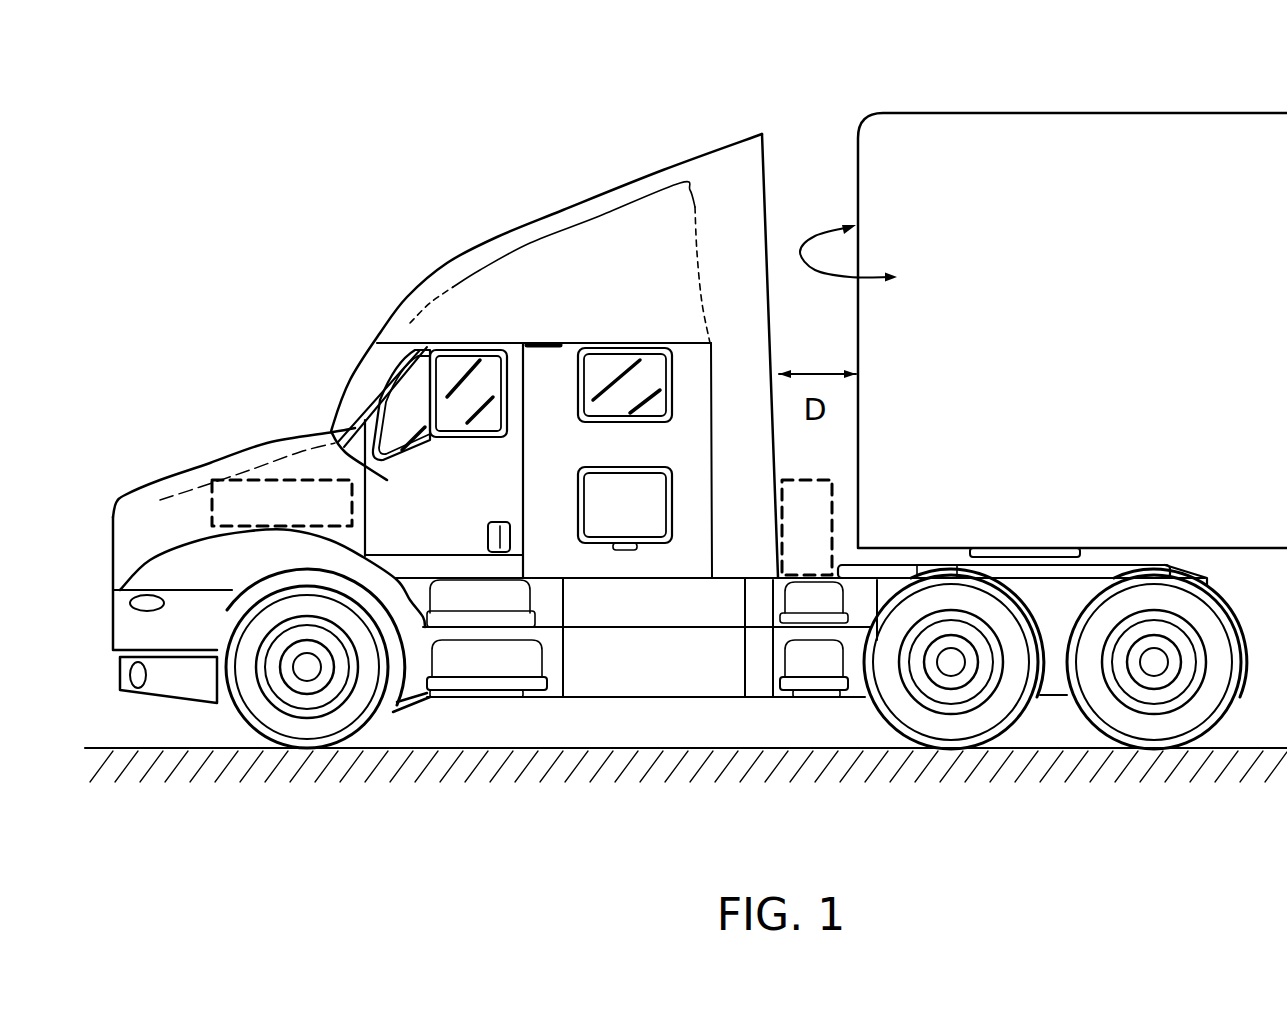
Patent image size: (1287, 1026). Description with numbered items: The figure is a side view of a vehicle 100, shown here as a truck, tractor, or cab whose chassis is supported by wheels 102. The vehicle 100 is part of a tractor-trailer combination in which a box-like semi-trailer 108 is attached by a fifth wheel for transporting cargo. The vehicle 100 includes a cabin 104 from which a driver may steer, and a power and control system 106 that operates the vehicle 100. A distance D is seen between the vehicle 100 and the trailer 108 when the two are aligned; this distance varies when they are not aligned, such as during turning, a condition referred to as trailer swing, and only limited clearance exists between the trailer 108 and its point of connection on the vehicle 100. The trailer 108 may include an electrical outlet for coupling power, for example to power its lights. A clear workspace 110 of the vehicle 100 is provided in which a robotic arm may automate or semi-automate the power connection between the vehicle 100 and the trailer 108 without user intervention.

The vehicle 100 is at (360, 278).
The wheels 102 is at (245, 720).
The cabin 104 is at (300, 476).
The power and control system 106 is at (213, 480).
The trailer 108 is at (1005, 76).
The clear workspace 110 is at (832, 507).